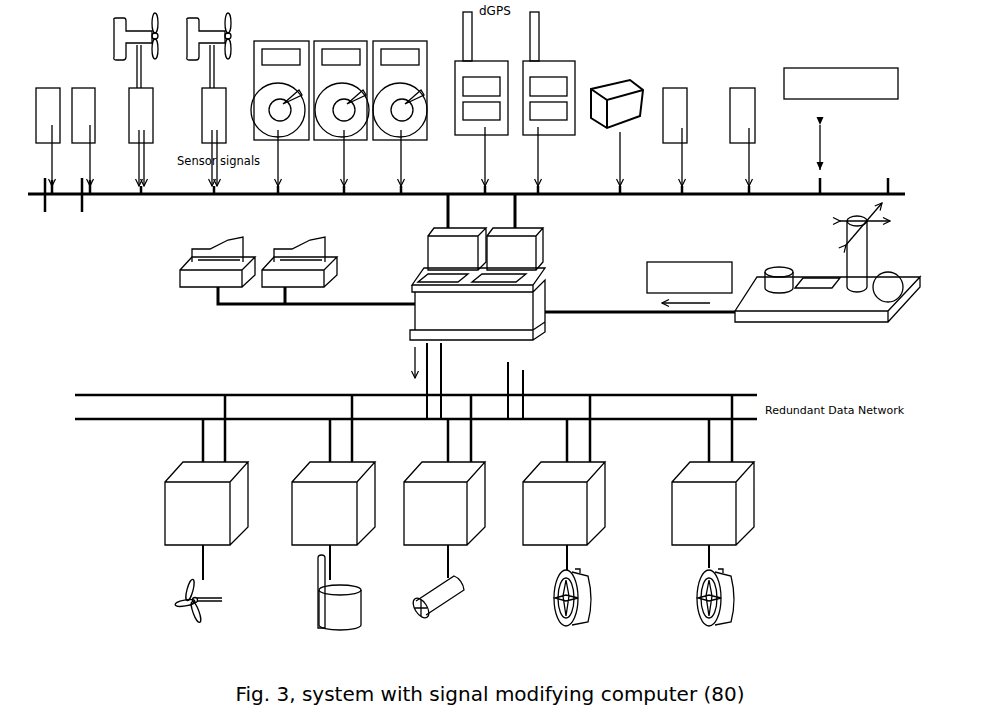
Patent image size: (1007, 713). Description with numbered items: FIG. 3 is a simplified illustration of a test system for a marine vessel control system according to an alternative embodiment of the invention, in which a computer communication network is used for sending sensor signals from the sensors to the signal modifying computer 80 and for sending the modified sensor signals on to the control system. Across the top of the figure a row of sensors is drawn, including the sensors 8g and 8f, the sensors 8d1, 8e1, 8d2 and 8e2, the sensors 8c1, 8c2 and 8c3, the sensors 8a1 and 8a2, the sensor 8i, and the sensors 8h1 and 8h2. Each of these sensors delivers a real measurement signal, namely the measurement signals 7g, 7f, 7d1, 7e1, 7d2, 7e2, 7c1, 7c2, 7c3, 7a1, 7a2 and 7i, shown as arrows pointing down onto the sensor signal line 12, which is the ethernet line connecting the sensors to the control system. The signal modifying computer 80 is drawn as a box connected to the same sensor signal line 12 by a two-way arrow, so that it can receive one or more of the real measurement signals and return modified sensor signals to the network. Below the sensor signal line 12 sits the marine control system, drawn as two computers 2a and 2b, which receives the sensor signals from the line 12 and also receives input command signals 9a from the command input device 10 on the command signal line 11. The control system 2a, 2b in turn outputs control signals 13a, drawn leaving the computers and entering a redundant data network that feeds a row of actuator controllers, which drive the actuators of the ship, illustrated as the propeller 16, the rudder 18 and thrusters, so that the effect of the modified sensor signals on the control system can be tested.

The control system 2a is at (477, 267).
The control system 2b is at (507, 273).
The real measurement signal 7a1 is at (499, 156).
The real measurement signal 7a2 is at (556, 156).
The real measurement signal 7c1 is at (289, 158).
The real measurement signal 7c2 is at (355, 158).
The real measurement signal 7c3 is at (412, 158).
The real measurement signal 7d1 is at (126, 158).
The real measurement signal 7d2 is at (208, 157).
The real measurement signal 7e1 is at (153, 158).
The real measurement signal 7e2 is at (231, 157).
The real measurement signal 7f is at (91, 155).
The real measurement signal 7g is at (54, 155).
The real measurement signal 7i is at (626, 159).
The sensor 8a1 is at (481, 73).
The sensor 8a2 is at (549, 73).
The sensor 8c1 is at (280, 81).
The sensor 8c2 is at (341, 81).
The sensor 8c3 is at (400, 81).
The sensor 8d1 is at (133, 80).
The sensor 8d2 is at (206, 80).
The sensor 8e1 is at (153, 48).
The sensor 8e2 is at (226, 48).
The sensor 8f is at (83, 105).
The sensor 8g is at (48, 105).
The sensor 8h1 is at (684, 105).
The sensor 8h2 is at (753, 105).
The sensor 8i is at (617, 77).
The input command signal 9a is at (689, 282).
The command input device 10 is at (810, 318).
The command signal line 11 is at (682, 314).
The sensor signal line 12 is at (638, 200).
The control signal 13a is at (413, 366).
The propeller 16 is at (183, 612).
The rudder 18 is at (318, 632).
The signal modifying computer 80 is at (841, 119).